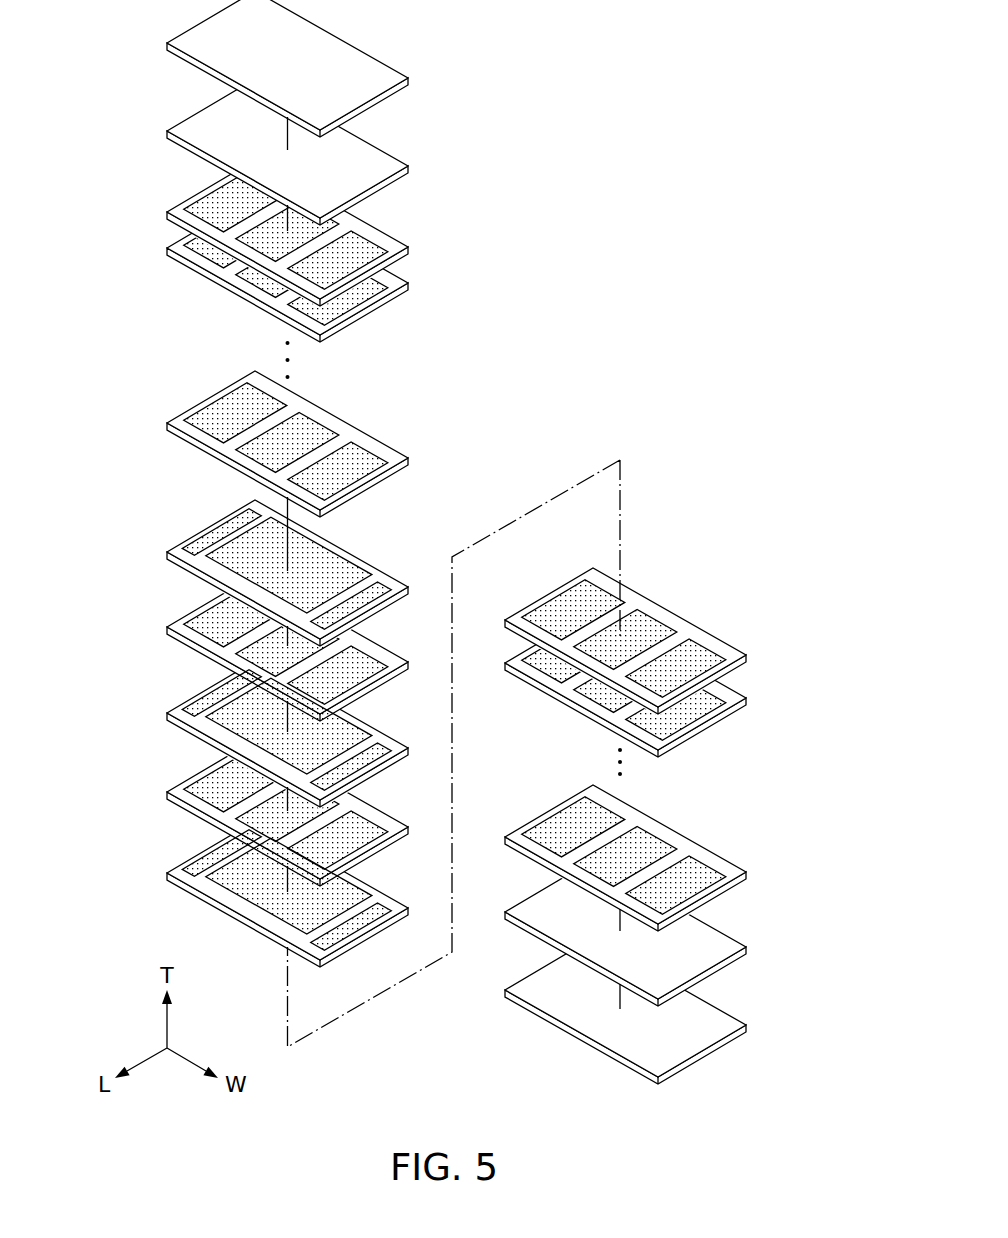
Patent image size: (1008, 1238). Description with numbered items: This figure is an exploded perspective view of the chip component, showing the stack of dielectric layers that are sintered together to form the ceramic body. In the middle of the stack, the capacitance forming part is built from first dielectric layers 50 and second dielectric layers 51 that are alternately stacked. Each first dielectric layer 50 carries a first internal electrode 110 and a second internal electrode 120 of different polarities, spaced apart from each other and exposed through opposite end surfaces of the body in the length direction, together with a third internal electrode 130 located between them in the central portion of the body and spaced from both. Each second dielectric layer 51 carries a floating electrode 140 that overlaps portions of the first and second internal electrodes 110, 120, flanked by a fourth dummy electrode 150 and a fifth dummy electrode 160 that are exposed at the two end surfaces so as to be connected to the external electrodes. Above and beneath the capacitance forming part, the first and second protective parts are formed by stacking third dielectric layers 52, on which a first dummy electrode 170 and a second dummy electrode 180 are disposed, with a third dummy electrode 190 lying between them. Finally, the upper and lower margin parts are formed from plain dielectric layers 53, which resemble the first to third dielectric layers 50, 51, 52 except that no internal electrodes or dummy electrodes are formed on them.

The first dielectric layer 50 is at (172, 631).
The second dielectric layer 51 is at (172, 556).
The third dielectric layer 52 is at (172, 250).
The dielectric layer 53 is at (377, 158).
The first internal electrode 110 is at (205, 613).
The second internal electrode 120 is at (366, 665).
The third internal electrode 130 is at (240, 653).
The floating electrode 140 is at (323, 560).
The fourth dummy electrode 150 is at (208, 528).
The fifth dummy electrode 160 is at (383, 590).
The first dummy electrode 170 is at (215, 197).
The second dummy electrode 180 is at (373, 244).
The third dummy electrode 190 is at (250, 240).